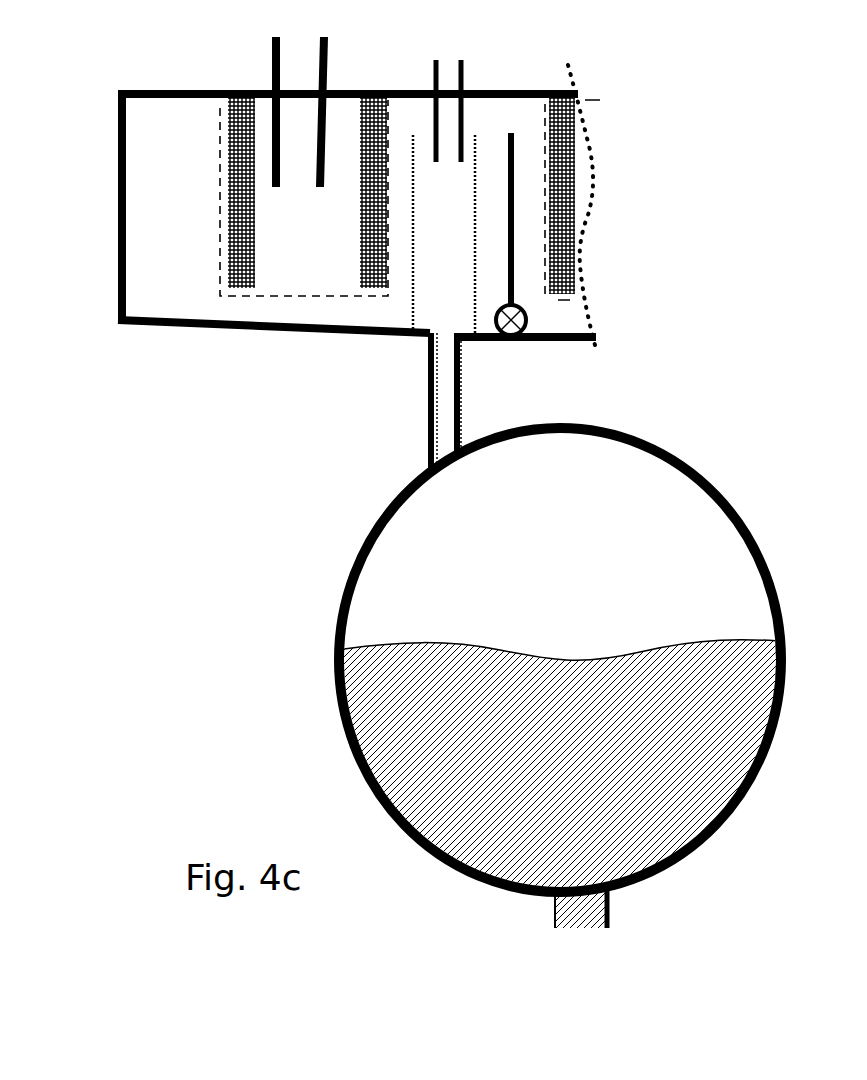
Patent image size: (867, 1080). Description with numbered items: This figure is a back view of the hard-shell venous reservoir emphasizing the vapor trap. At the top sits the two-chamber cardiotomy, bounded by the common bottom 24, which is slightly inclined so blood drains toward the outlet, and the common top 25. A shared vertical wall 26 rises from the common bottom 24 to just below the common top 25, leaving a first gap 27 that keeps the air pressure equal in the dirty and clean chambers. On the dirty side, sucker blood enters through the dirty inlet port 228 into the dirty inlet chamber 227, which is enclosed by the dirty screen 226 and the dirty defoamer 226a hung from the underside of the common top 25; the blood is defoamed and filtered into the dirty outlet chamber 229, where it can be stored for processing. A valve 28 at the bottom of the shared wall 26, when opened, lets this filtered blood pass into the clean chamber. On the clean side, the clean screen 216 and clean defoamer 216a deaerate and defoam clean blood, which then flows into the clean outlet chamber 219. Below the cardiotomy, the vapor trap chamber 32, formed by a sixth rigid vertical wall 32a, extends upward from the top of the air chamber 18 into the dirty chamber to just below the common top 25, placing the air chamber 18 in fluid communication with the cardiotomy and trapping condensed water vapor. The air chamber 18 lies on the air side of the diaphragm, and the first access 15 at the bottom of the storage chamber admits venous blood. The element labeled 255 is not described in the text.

The first access 15 is at (573, 906).
The air chamber 18 is at (342, 662).
The common bottom 24 is at (170, 330).
The common top 25 is at (175, 90).
The shared vertical wall 26 is at (517, 243).
The first gap 27 is at (515, 92).
The valve 28 is at (535, 341).
The vapor trap chamber 32 is at (440, 372).
The sixth rigid vertical wall 32a is at (430, 418).
The clean screen 216 is at (545, 215).
The clean defoamer 216a is at (575, 190).
The clean outlet chamber 219 is at (527, 160).
The dirty screen 226 is at (280, 296).
The dirty defoamer 226a is at (233, 193).
The dirty inlet chamber 227 is at (332, 193).
The dirty inlet port 228 is at (298, 88).
The dirty outlet chamber 229 is at (173, 205).
The capacitor 255 is at (440, 88).